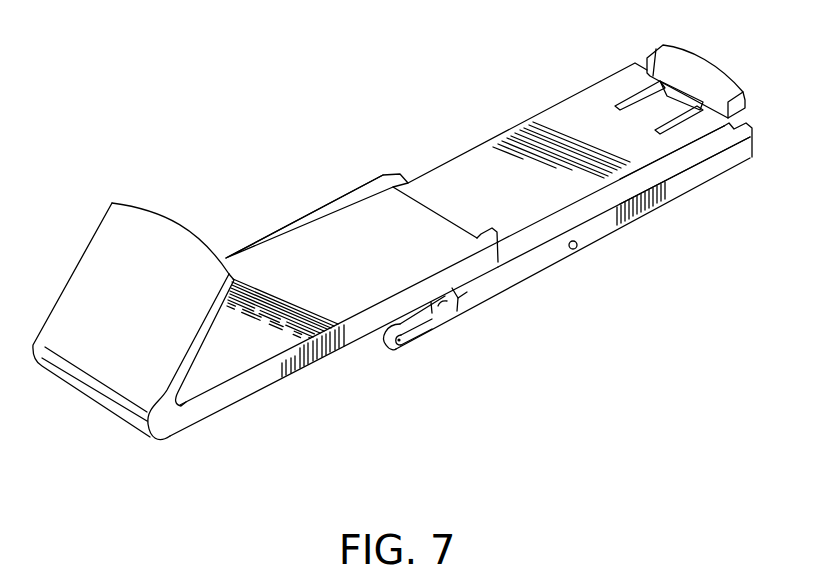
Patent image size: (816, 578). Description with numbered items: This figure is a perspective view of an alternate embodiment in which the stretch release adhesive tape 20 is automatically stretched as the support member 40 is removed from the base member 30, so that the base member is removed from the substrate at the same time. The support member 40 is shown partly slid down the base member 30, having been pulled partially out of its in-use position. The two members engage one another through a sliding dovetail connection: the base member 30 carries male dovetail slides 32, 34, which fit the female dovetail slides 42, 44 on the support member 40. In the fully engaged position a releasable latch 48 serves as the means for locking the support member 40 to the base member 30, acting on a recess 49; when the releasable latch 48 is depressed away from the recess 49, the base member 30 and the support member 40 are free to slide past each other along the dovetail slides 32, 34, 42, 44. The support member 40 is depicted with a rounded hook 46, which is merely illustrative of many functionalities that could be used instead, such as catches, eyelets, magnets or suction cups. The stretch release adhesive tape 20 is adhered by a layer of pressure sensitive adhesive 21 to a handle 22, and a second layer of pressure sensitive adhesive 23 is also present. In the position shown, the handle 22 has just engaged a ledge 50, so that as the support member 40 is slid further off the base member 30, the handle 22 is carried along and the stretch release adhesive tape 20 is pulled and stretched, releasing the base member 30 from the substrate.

The stretch release adhesive tape 20 is at (532, 296).
The layer of pressure sensitive adhesive 21 is at (573, 250).
The handle 22 is at (457, 304).
The second layer of pressure sensitive adhesive 23 is at (616, 228).
The base member 30 is at (553, 120).
The male dovetail slide 32 is at (697, 142).
The male dovetail slide 34 is at (468, 150).
The support member 40 is at (320, 181).
The female dovetail slide 42 is at (295, 380).
The female dovetail slide 44 is at (255, 243).
The rounded hook 46 is at (145, 328).
The releasable latch 48 is at (707, 74).
The recess 49 is at (458, 224).
The ledge 50 is at (461, 296).